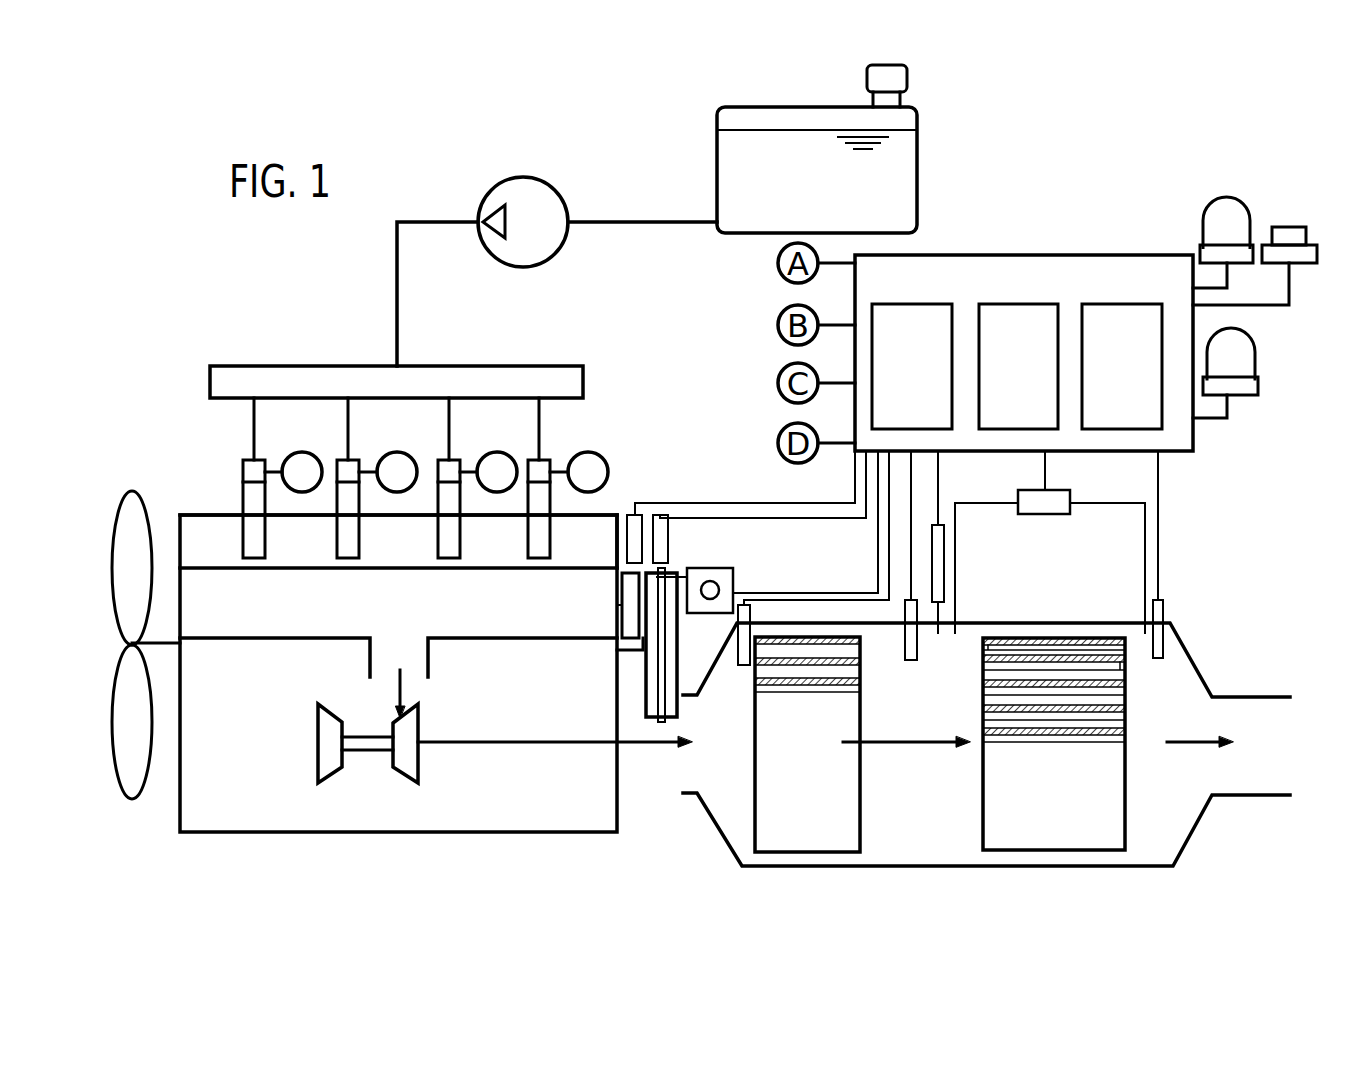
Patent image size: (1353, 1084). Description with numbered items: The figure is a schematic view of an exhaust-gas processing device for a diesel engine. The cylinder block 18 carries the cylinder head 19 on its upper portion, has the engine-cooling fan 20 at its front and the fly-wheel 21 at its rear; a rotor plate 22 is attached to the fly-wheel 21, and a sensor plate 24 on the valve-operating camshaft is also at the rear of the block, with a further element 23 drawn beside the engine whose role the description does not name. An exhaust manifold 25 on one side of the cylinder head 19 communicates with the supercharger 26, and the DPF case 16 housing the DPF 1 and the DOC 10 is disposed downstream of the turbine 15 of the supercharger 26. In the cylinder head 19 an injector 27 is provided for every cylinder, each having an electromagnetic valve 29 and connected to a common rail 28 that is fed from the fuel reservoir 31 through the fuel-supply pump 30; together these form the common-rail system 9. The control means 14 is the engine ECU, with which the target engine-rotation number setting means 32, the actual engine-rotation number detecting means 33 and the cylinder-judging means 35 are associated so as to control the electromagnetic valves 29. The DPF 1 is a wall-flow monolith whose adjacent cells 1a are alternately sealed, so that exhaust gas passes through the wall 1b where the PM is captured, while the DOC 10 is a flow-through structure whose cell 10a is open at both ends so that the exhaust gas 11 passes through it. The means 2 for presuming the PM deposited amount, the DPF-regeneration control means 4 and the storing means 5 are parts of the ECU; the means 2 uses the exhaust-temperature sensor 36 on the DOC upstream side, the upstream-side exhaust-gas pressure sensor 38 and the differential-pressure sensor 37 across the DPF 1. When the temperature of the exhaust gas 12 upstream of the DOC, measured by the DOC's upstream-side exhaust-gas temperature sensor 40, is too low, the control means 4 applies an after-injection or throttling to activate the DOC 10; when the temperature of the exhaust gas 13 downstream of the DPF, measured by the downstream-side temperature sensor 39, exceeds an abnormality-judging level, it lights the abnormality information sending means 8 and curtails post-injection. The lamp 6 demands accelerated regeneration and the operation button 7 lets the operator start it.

The DPF 1 is at (1062, 828).
The cell 1a is at (1077, 720).
The wall 1b is at (1028, 703).
The means for presuming the PM deposited amount 2 is at (905, 313).
The DPF-regeneration control means 4 is at (1010, 313).
The storing means 5 is at (1122, 315).
The means for sending message to demand accelerated regeneration 6 is at (1220, 210).
The operation means for starting accelerated regeneration 7 is at (1290, 232).
The DPF's abnormality information sending means 8 is at (1228, 360).
The common-rail system 9 is at (586, 434).
The DOC 10 is at (803, 828).
The cell 10a is at (795, 688).
The exhaust gas 11 is at (906, 745).
The exhaust gas on the DOC's upstream side 12 is at (630, 748).
The exhaust gas on the DPF's downstream side 13 is at (1185, 745).
The control means 14 is at (1073, 272).
The turbine 15 is at (430, 762).
The DPF case 16 is at (945, 868).
The cylinder block 18 is at (572, 834).
The cylinder head 19 is at (607, 532).
The engine-cooling fan 20 is at (130, 520).
The fly-wheel 21 is at (677, 702).
The rotor plate 22 is at (767, 532).
The throttle valve 23 is at (617, 605).
The sensor plate 24 is at (615, 627).
The exhaust manifold 25 is at (238, 628).
The supercharger 26 is at (373, 756).
The injector 27 is at (530, 542).
The common rail 28 is at (300, 382).
The electromagnetic valve 29 is at (540, 470).
The fuel-supply pump 30 is at (545, 192).
The fuel reservoir 31 is at (905, 118).
The target engine-rotation number setting means 32 is at (720, 585).
The actual engine-rotation number detecting means 33 is at (665, 523).
The cylinder-judging means 35 is at (637, 527).
The exhaust-temperature sensor 36 is at (906, 662).
The differential-pressure sensor 37 is at (1048, 508).
The DPF's upstream-side exhaust-gas pressure sensor 38 is at (946, 560).
The DPF's downstream-side exhaust-gas temperature sensor 39 is at (1155, 662).
The DOC's upstream-side exhaust-gas temperature sensor 40 is at (742, 668).